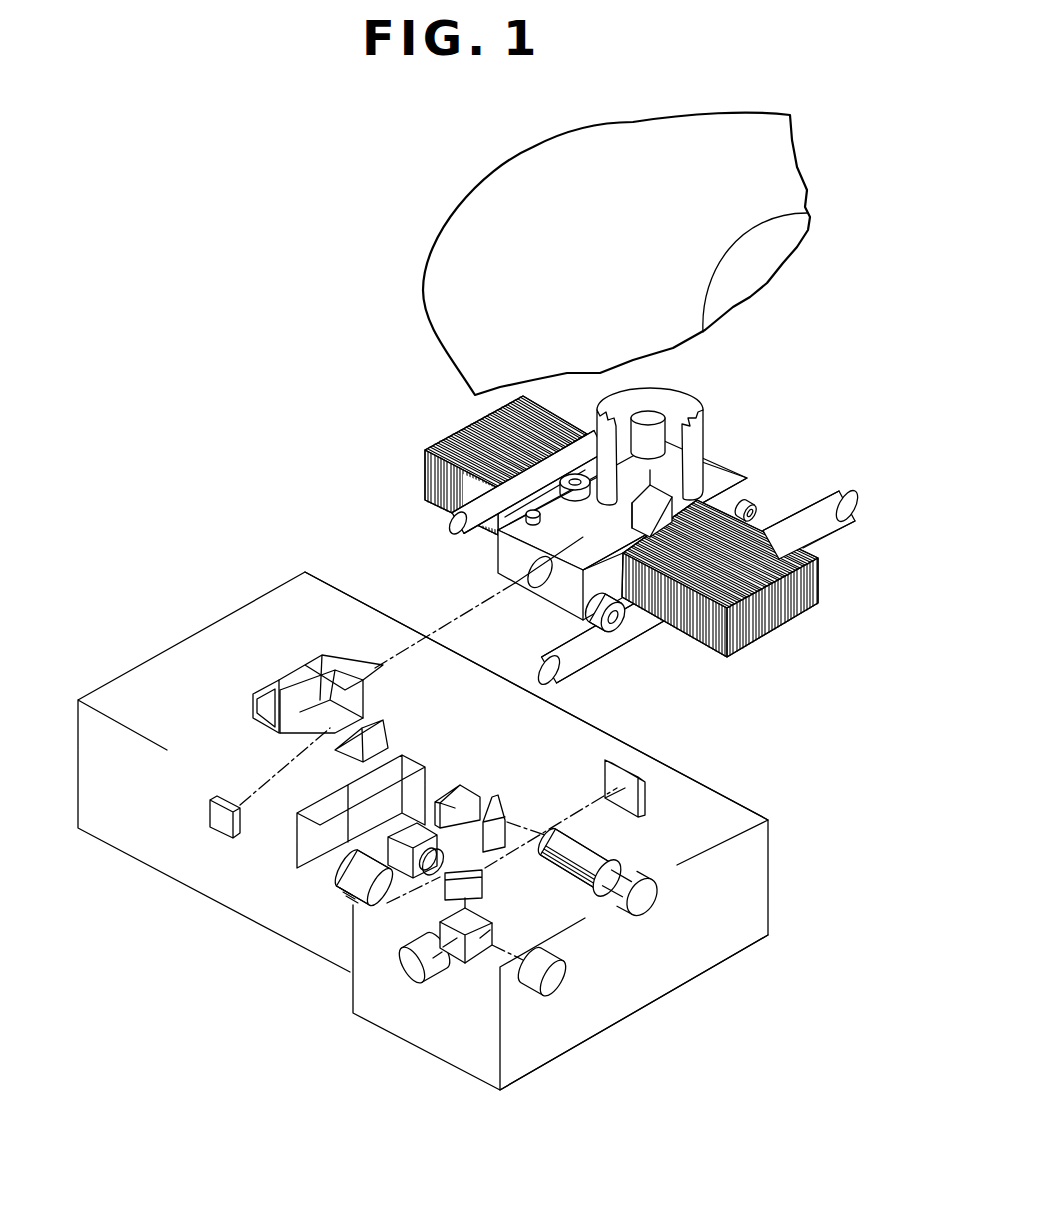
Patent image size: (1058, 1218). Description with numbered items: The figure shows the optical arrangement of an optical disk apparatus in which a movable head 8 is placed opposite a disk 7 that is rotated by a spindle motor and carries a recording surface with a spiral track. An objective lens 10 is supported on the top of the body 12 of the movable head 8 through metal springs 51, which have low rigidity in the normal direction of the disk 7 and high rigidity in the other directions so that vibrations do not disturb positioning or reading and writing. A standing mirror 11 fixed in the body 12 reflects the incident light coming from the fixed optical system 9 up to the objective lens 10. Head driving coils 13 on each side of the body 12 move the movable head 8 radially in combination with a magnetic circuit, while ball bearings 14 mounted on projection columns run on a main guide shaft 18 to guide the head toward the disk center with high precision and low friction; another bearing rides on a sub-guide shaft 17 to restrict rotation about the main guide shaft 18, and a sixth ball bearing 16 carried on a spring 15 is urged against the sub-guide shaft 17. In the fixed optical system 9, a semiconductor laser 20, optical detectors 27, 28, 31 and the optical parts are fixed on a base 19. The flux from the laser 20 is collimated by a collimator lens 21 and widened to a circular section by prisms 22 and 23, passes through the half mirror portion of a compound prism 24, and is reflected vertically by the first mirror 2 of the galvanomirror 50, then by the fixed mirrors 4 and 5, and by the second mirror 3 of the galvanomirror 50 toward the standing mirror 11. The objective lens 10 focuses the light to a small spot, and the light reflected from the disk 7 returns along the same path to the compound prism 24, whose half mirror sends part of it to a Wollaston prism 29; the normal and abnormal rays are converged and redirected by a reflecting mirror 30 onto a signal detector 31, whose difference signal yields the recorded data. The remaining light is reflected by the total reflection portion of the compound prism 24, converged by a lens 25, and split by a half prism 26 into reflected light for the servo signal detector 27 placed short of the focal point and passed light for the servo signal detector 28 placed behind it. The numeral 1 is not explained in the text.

The semiconductor laser 1 is at (325, 677).
The first mirror 2 is at (290, 670).
The second mirror 3 is at (363, 653).
The fixed mirror 4 is at (226, 835).
The fixed mirror 5 is at (392, 737).
The disk 7 is at (568, 155).
The movable head 8 is at (676, 376).
The fixed optical system 9 is at (768, 905).
The objective lens 10 is at (646, 411).
The standing mirror 11 is at (675, 458).
The body 12 is at (503, 558).
The head driving coil 13 is at (787, 620).
The ball bearing 14 is at (612, 632).
The spring 15 is at (540, 514).
The sixth ball bearing 16 is at (577, 468).
The sub-guide shaft 17 is at (452, 523).
The main guide shaft 18 is at (798, 513).
The base 19 is at (733, 958).
The semiconductor laser 20 is at (652, 903).
The collimator lens 21 is at (592, 852).
The prism 22 is at (503, 808).
The prism 23 is at (462, 788).
The compound prism 24 is at (299, 838).
The lens 25 is at (340, 880).
The half prism 26 is at (477, 953).
The servo signal detector 27 is at (412, 973).
The servo signal detector 28 is at (555, 990).
The Wollaston prism 29 is at (322, 860).
The reflecting mirror 30 is at (455, 892).
The signal detector 31 is at (632, 768).
The galvanomirror 50 is at (322, 610).
The metal spring 51 is at (687, 405).